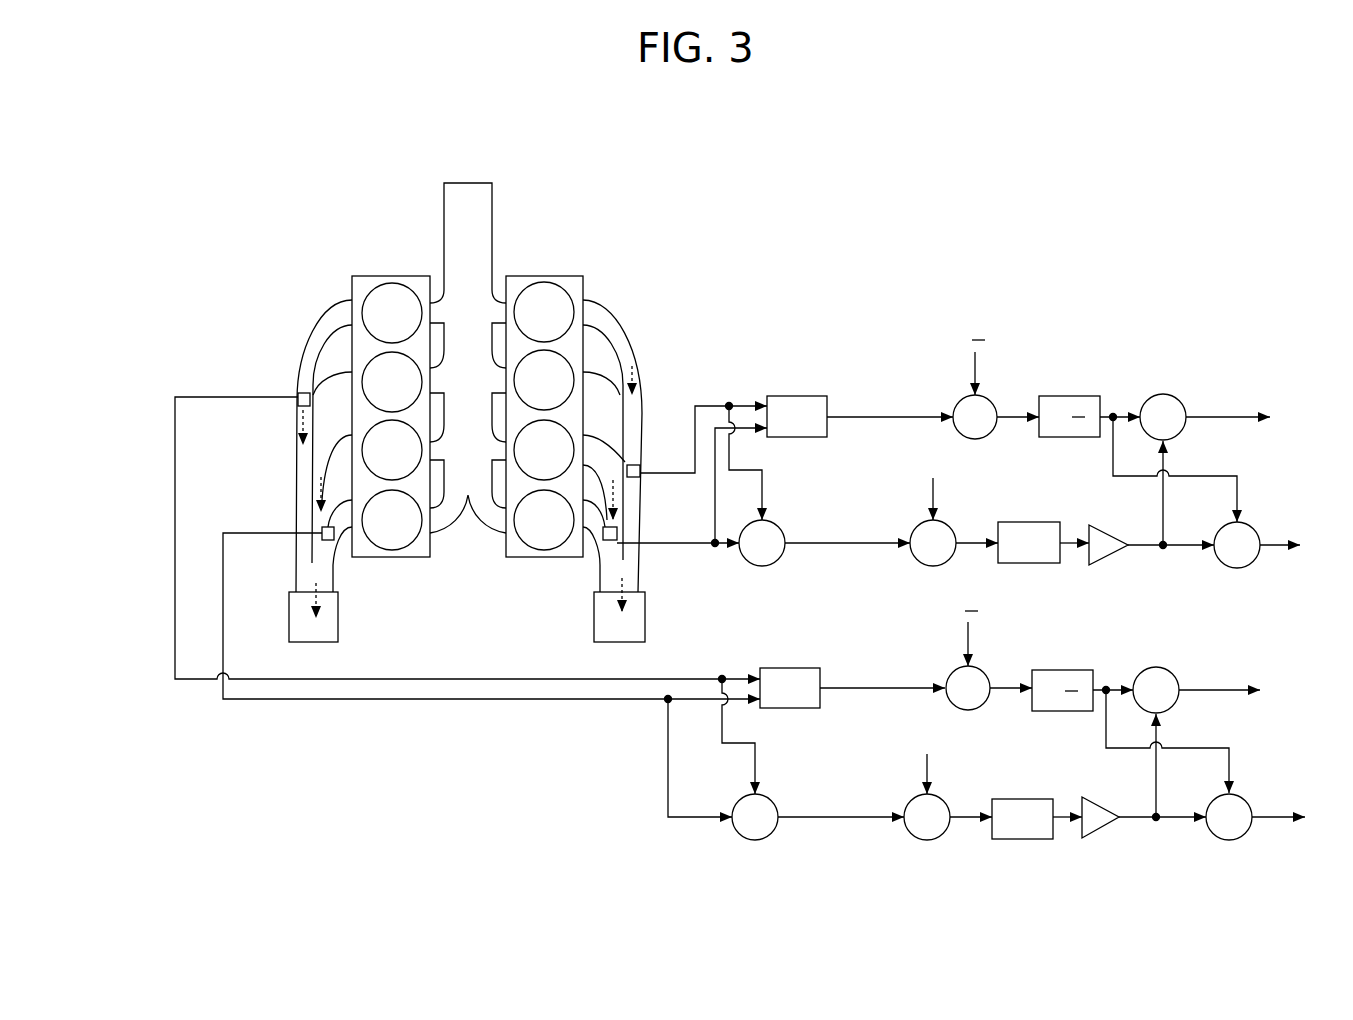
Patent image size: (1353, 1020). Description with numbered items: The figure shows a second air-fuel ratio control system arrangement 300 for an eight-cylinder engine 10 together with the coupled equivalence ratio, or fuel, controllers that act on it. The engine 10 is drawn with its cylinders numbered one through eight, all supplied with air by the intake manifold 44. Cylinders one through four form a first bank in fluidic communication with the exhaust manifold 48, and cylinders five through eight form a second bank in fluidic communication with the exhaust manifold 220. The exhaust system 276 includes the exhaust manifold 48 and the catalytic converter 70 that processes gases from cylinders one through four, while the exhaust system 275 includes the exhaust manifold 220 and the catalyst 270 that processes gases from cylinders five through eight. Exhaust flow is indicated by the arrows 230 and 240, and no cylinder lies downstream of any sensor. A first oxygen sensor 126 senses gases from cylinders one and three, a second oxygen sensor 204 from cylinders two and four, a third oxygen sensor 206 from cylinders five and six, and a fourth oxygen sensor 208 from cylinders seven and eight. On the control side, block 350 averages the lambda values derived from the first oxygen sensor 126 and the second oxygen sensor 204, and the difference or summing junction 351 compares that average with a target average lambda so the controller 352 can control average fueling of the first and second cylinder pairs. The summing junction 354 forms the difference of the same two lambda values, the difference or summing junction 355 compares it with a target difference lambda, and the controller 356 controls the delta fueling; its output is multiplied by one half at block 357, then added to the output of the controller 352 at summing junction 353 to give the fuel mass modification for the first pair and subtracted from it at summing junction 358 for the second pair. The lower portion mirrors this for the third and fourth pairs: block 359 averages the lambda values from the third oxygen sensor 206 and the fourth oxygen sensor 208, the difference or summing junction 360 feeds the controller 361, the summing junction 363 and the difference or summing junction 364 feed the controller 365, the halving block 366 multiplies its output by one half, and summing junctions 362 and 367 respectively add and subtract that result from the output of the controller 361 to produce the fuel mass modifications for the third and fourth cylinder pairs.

The control system 300 is at (160, 137).
The engine 10 is at (335, 235).
The intake manifold 44 is at (481, 222).
The exhaust manifold 48 is at (625, 360).
The catalytic converter 70 is at (645, 622).
The first oxygen sensor 126 is at (635, 462).
The second oxygen sensor 204 is at (618, 538).
The third oxygen sensor 206 is at (298, 397).
The fourth oxygen sensor 208 is at (322, 535).
The exhaust manifold 220 is at (313, 353).
The arrows 230 is at (637, 372).
The arrows 240 is at (300, 428).
The catalyst 270 is at (338, 625).
The exhaust system 275 is at (245, 330).
The exhaust system 276 is at (642, 320).
The average function block 350 is at (785, 396).
The difference or summing junction 351 is at (982, 400).
The controller C12-bar 352 is at (1065, 396).
The summing junction 353 is at (1175, 398).
The summing junction 354 is at (777, 528).
The difference or summing junction 355 is at (945, 528).
The controller C-delta-12 356 is at (1005, 522).
The halving block 357 is at (1089, 525).
The summing junction 358 is at (1249, 526).
The average function block 359 is at (779, 668).
The difference or summing junction 360 is at (977, 670).
The controller C34-bar 361 is at (1062, 670).
The summing junction 362 is at (1169, 670).
The summing junction 363 is at (772, 800).
The difference or summing junction 364 is at (939, 801).
The controller C-delta-34 365 is at (1003, 799).
The halving block 366 is at (1087, 797).
The summing junction 367 is at (1242, 800).